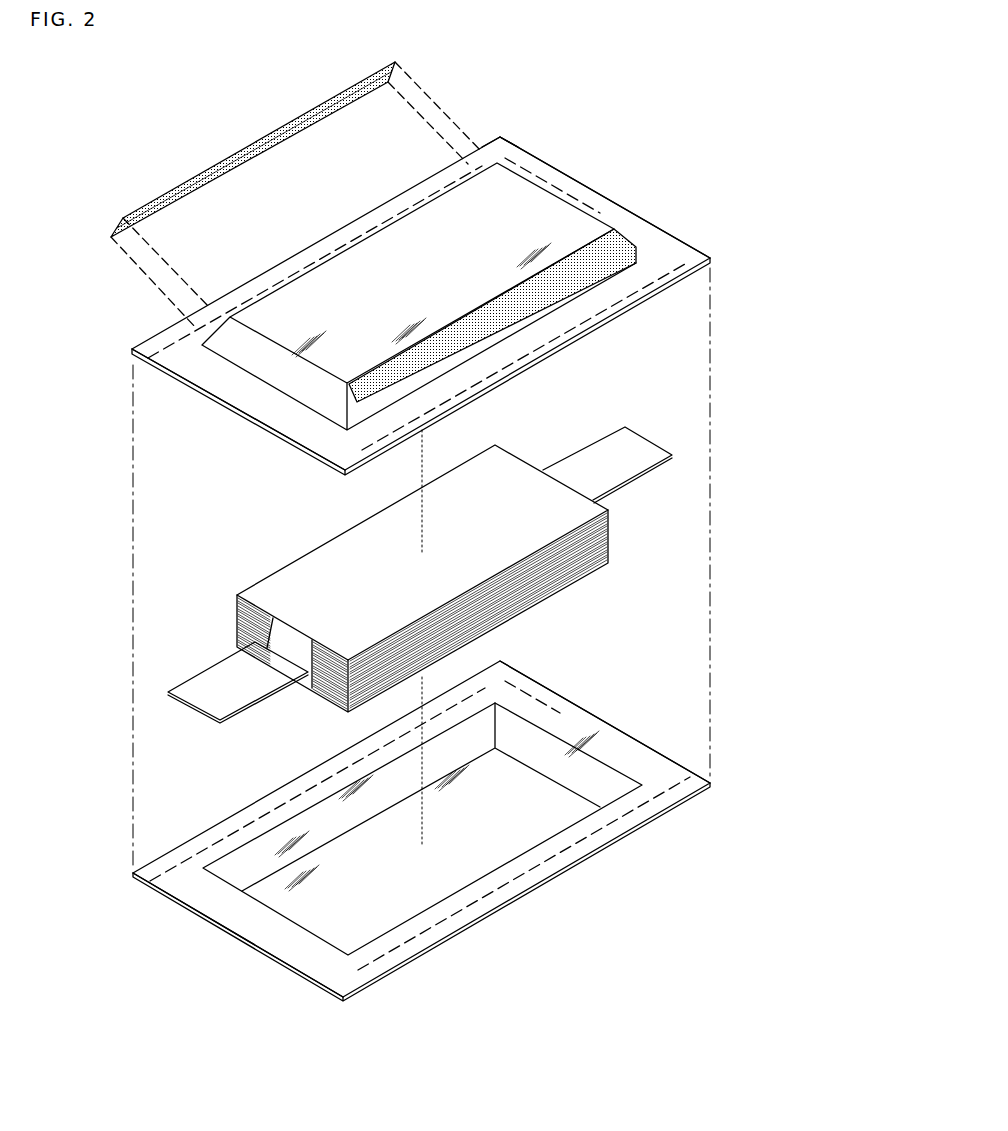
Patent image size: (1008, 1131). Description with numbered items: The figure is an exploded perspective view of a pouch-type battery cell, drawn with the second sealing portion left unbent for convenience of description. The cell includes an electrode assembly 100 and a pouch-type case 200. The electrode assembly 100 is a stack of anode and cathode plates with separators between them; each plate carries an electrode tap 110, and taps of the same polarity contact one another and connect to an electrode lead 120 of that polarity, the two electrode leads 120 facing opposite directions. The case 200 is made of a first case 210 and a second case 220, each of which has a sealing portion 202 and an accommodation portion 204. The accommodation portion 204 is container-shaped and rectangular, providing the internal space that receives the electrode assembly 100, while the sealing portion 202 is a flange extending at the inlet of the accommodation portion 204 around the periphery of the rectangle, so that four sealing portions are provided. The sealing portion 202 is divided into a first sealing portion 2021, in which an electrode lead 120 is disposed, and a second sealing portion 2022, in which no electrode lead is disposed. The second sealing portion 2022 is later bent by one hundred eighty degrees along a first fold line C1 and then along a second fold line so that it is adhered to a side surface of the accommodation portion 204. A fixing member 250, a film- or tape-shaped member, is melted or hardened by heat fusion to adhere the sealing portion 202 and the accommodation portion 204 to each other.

The electrode assembly 100 is at (276, 553).
The electrode tap 110 is at (282, 646).
The electrode lead 120 is at (212, 688).
The pouch-type case 200 is at (822, 316).
The sealing portion 202 is at (741, 161).
The first sealing portion 2021 is at (600, 210).
The second sealing portion 2022 is at (663, 275).
The accommodation portion 204 is at (247, 348).
The first case 210 is at (476, 458).
The second case 220 is at (682, 816).
The fixing member 250 is at (155, 180).
The first fold line C1 is at (497, 133).